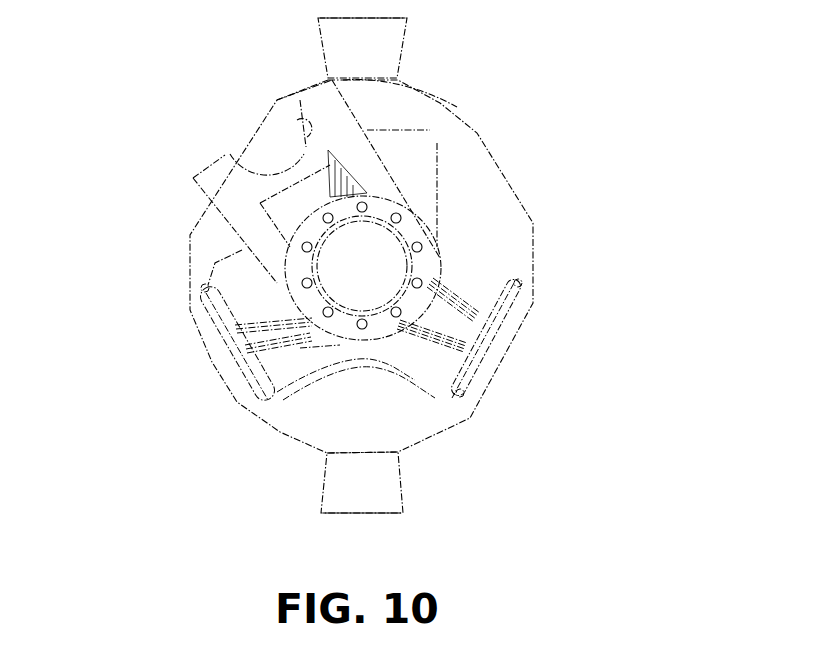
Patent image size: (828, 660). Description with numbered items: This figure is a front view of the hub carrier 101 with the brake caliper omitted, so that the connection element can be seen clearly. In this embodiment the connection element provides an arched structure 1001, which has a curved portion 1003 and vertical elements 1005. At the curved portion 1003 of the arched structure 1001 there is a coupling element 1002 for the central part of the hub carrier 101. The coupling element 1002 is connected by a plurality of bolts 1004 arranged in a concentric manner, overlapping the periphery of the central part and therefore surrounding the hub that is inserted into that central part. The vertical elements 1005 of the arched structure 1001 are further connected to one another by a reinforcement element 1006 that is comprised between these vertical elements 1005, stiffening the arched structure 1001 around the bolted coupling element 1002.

The hub carrier 101 is at (600, 300).
The arched structure 1001 is at (270, 291).
The coupling element 1002 is at (377, 335).
The curved portion 1003 is at (418, 305).
The bolts 1004 is at (417, 243).
The vertical elements 1005 is at (235, 208).
The reinforcement element 1006 is at (288, 180).